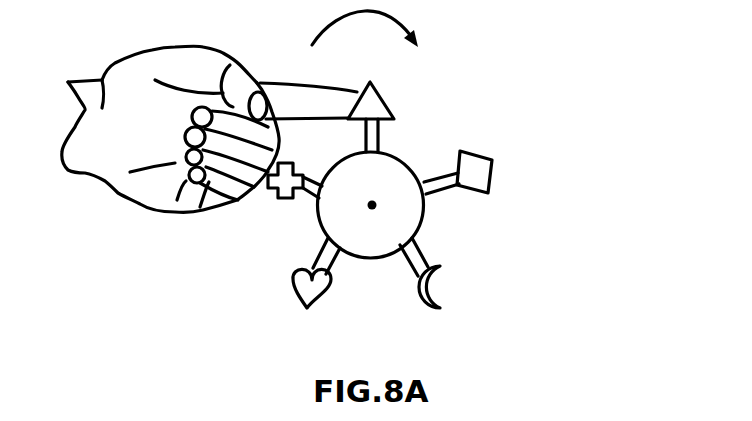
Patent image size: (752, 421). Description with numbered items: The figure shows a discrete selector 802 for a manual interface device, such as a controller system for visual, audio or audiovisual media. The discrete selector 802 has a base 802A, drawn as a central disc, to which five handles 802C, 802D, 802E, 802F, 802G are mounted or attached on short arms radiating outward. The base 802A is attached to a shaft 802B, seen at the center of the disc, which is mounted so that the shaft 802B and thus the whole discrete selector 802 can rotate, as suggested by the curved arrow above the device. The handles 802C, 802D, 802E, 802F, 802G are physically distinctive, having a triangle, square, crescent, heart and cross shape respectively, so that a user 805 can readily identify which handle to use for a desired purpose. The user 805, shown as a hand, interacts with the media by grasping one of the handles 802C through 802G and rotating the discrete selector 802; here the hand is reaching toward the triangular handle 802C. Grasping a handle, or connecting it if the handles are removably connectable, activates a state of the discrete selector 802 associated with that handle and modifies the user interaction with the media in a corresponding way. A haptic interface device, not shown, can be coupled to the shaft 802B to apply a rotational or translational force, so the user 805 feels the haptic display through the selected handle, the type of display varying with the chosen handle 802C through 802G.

The user 805 is at (118, 193).
The discrete selector 802 is at (540, 198).
The base 802A is at (424, 211).
The shaft 802B is at (370, 206).
The handle 802C is at (385, 106).
The handle 802D is at (477, 152).
The handle 802E is at (430, 273).
The handle 802F is at (295, 287).
The handle 802G is at (277, 198).